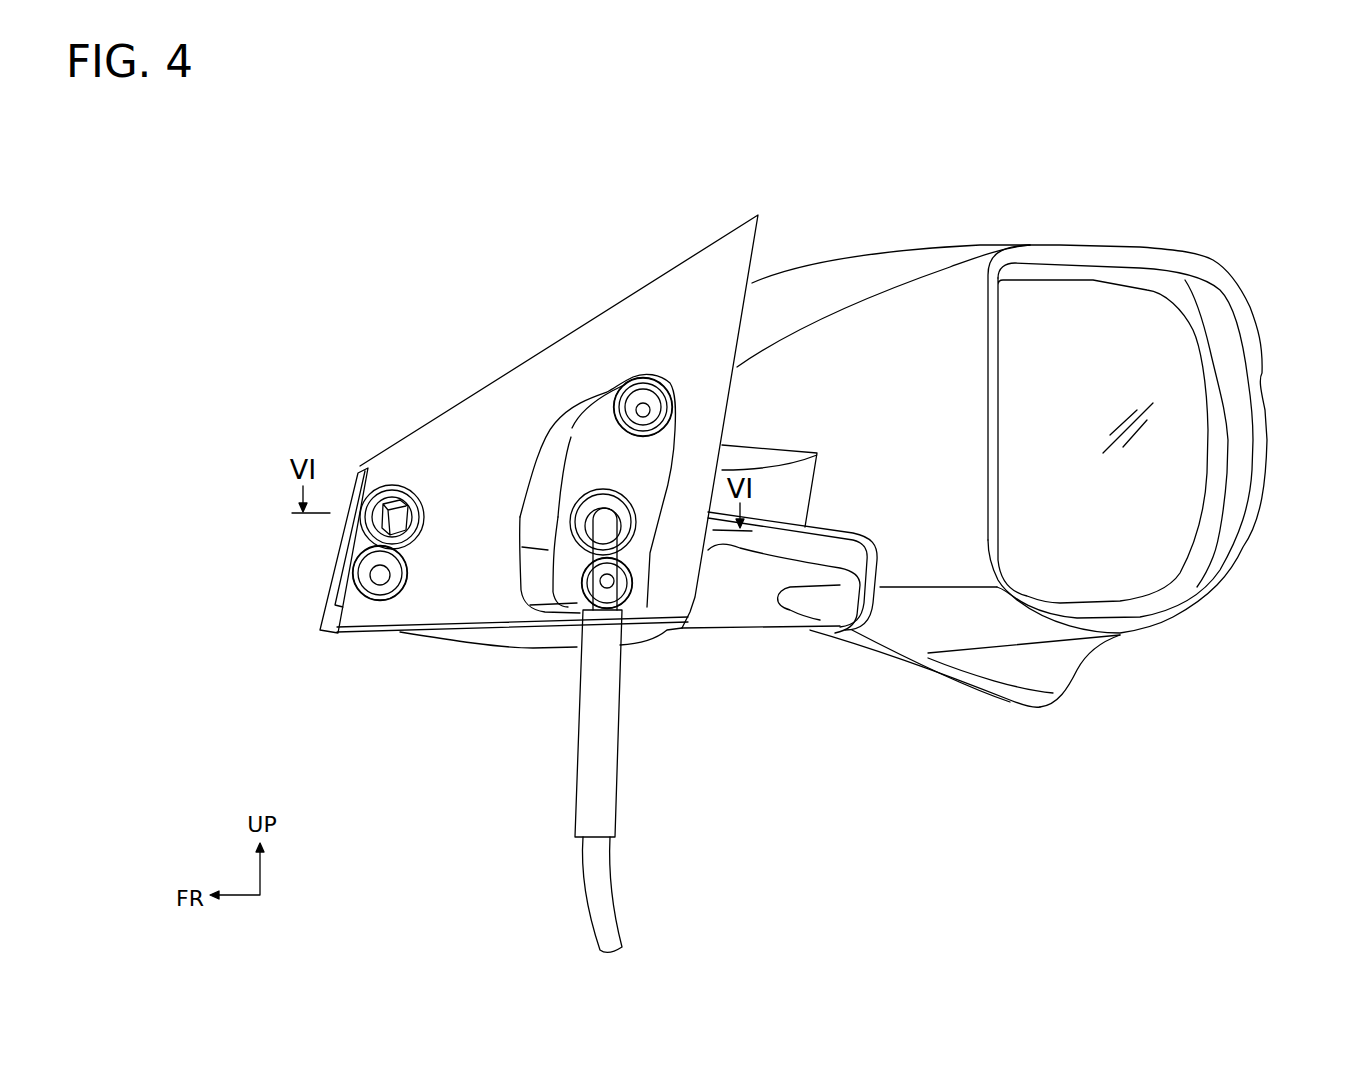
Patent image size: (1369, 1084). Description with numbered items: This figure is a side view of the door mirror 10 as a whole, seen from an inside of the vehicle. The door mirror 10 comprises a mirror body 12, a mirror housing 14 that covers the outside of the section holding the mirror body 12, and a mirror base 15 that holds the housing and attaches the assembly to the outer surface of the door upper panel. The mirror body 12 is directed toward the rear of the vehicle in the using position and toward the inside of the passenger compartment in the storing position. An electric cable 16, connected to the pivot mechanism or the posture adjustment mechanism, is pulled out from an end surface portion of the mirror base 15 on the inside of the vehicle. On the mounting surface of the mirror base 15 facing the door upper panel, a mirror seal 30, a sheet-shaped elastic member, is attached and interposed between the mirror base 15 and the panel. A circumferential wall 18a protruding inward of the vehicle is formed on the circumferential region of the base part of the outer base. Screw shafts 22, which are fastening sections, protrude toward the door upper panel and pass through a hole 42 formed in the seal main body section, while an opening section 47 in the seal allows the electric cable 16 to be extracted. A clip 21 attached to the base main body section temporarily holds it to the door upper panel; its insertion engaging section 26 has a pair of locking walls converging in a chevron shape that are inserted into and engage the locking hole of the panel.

The door mirror 10 is at (1036, 405).
The mirror body 12 is at (1187, 433).
The mirror housing 14 is at (1215, 258).
The mirror base 15 is at (689, 640).
The electric cable 16 is at (597, 862).
The circumferential wall 18a is at (332, 563).
The clip 21 is at (388, 478).
The screw shafts 22 is at (643, 405).
The insertion engaging section 26 is at (408, 517).
The mirror seal 30 is at (522, 355).
The hole 42 is at (645, 495).
The opening section 47 is at (640, 520).